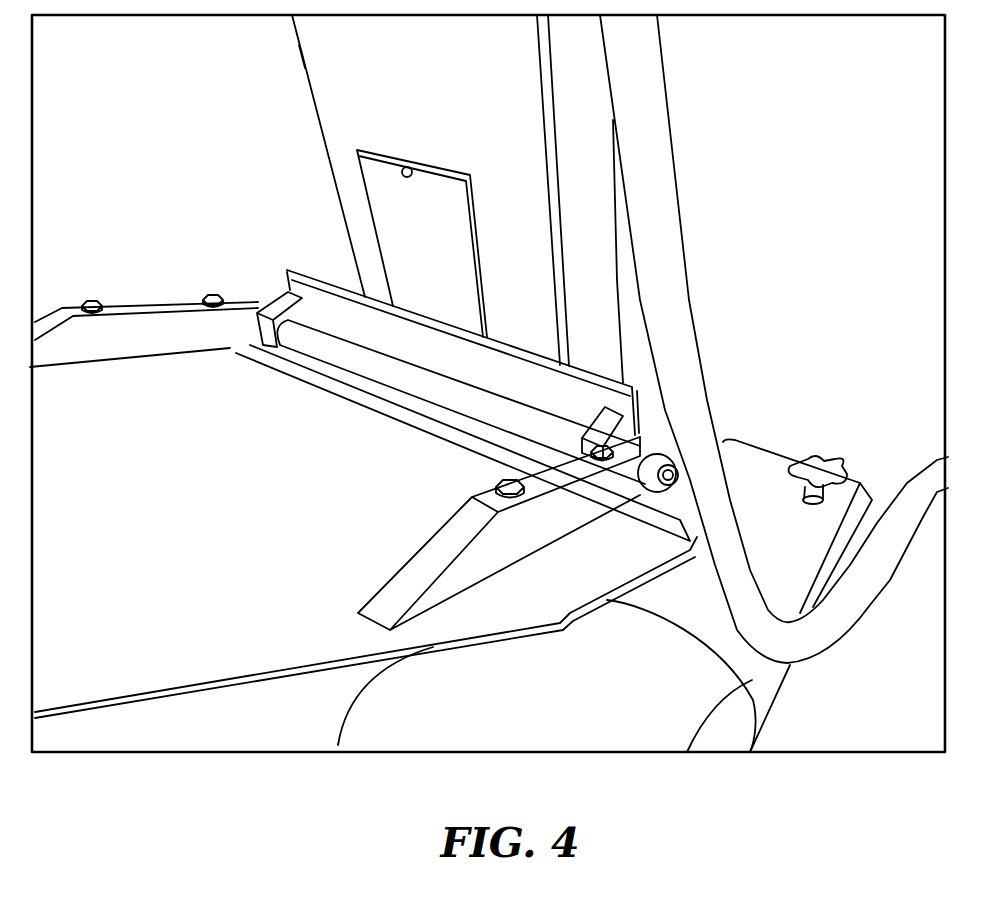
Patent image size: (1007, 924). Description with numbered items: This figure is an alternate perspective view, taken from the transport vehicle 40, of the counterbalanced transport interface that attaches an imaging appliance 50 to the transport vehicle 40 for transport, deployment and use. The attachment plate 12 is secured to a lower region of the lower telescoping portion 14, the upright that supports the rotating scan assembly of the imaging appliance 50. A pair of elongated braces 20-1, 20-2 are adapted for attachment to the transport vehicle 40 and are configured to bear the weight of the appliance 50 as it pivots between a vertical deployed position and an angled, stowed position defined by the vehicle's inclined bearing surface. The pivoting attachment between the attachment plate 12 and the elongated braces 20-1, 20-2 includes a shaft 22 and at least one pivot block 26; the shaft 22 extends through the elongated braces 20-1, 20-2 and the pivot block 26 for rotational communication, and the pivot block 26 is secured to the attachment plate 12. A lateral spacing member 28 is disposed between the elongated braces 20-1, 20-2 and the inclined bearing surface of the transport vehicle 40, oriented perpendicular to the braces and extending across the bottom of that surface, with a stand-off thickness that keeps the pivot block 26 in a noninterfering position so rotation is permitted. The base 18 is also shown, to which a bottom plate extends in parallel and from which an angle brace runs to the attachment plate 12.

The attachment plate 12 is at (340, 311).
The lower telescoping portion 14 is at (337, 97).
The base 18 is at (763, 468).
The elongated brace 20-1 is at (155, 305).
The elongated brace 20-2 is at (440, 548).
The shaft 22 is at (495, 403).
The pivot block 26 is at (273, 298).
The lateral spacing member 28 is at (650, 520).
The transport vehicle 40 is at (236, 703).
The imaging appliance 50 is at (345, 56).